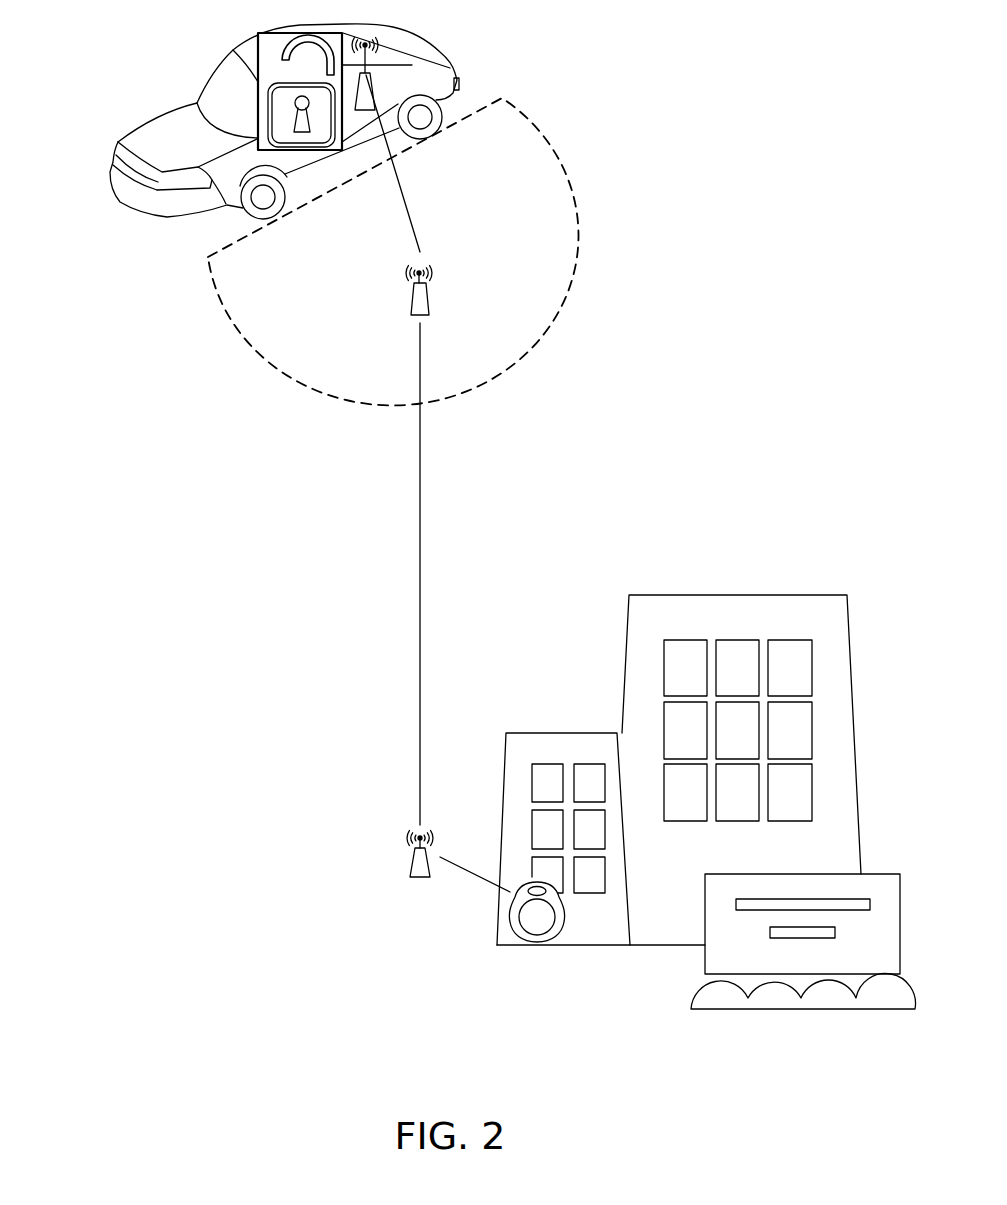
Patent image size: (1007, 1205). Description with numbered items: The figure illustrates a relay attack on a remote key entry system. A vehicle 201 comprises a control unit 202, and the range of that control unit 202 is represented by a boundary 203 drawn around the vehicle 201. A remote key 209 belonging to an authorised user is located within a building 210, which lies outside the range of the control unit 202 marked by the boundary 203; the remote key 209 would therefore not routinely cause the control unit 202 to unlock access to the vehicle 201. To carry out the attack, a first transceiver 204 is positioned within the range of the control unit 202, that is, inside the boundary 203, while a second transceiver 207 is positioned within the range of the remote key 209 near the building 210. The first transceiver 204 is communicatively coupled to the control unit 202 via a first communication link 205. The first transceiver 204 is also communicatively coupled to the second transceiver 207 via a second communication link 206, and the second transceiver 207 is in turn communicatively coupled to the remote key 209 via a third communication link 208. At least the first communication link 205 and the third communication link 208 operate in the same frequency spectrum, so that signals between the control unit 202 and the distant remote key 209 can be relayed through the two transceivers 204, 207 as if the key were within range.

The vehicle 201 is at (128, 108).
The control unit 202 is at (392, 86).
The boundary 203 is at (564, 144).
The first transceiver 204 is at (382, 298).
The first communication link 205 is at (434, 205).
The second communication link 206 is at (404, 564).
The second transceiver 207 is at (391, 871).
The third communication link 208 is at (459, 889).
The remote key 209 is at (501, 943).
The building 210 is at (617, 960).